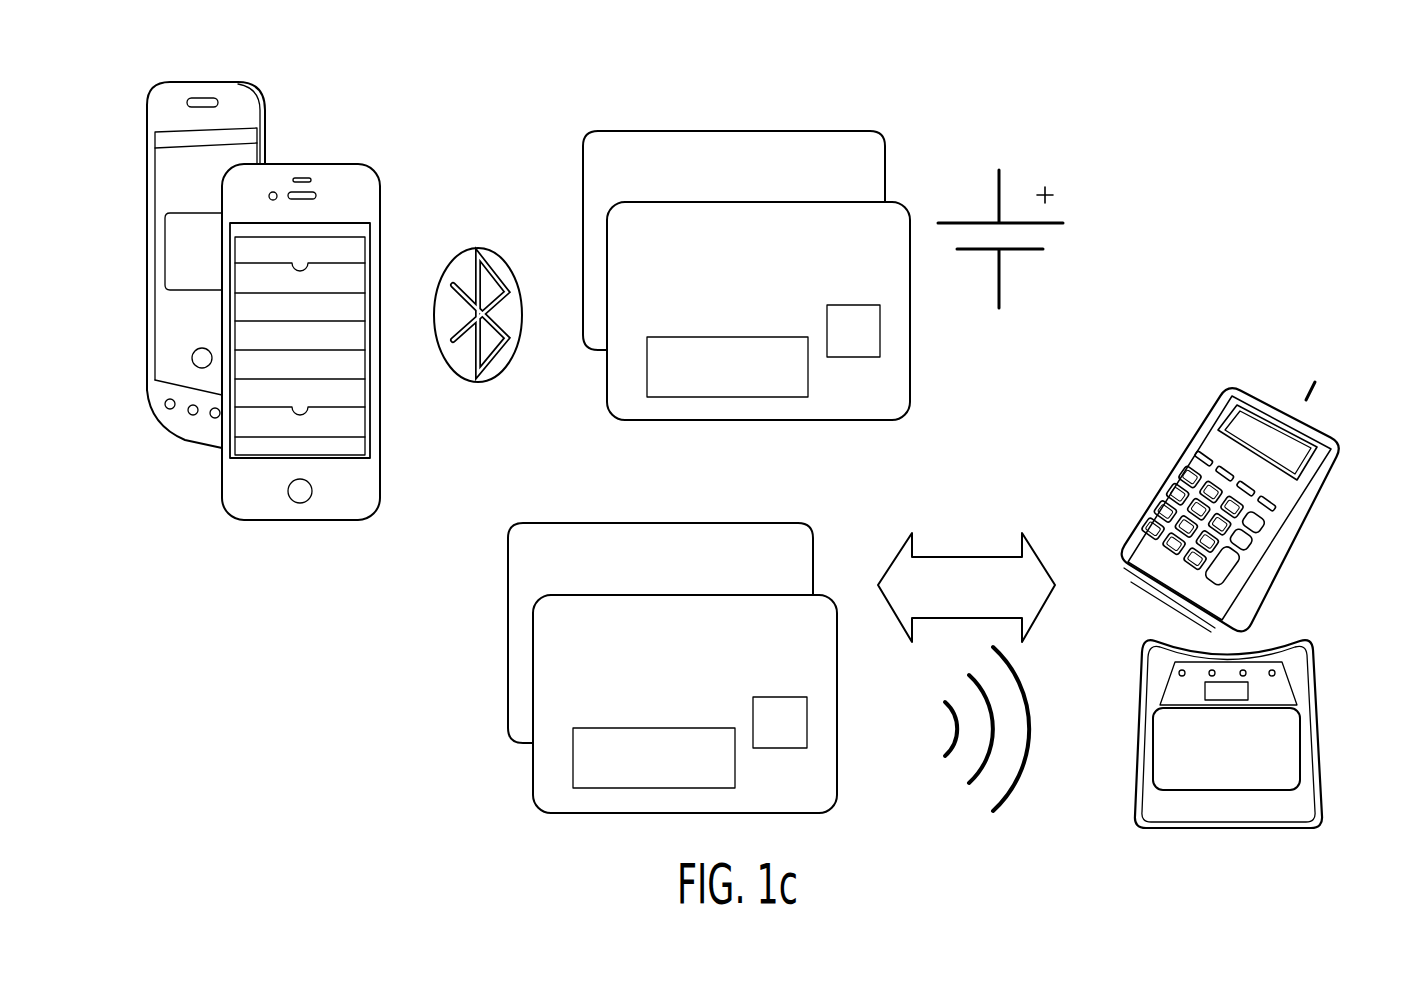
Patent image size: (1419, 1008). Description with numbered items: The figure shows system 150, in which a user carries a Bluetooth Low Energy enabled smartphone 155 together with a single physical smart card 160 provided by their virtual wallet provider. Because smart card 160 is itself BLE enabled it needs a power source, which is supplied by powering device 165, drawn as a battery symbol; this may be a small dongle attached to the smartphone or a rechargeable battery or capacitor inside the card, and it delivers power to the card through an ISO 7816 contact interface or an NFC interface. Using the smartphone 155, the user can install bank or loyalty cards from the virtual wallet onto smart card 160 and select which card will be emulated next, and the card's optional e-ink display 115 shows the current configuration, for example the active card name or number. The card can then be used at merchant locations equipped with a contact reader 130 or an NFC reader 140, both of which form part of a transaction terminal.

The system 150 is at (1379, 110).
The BLE enabled smartphone 155 is at (332, 175).
The smart card 160 is at (656, 476).
The display 115 is at (693, 382).
The powering device 165 is at (963, 222).
The contact reader 130 is at (1165, 467).
The NFC reader 140 is at (1317, 700).
The ISO7816 contact interface 7816 is at (966, 587).